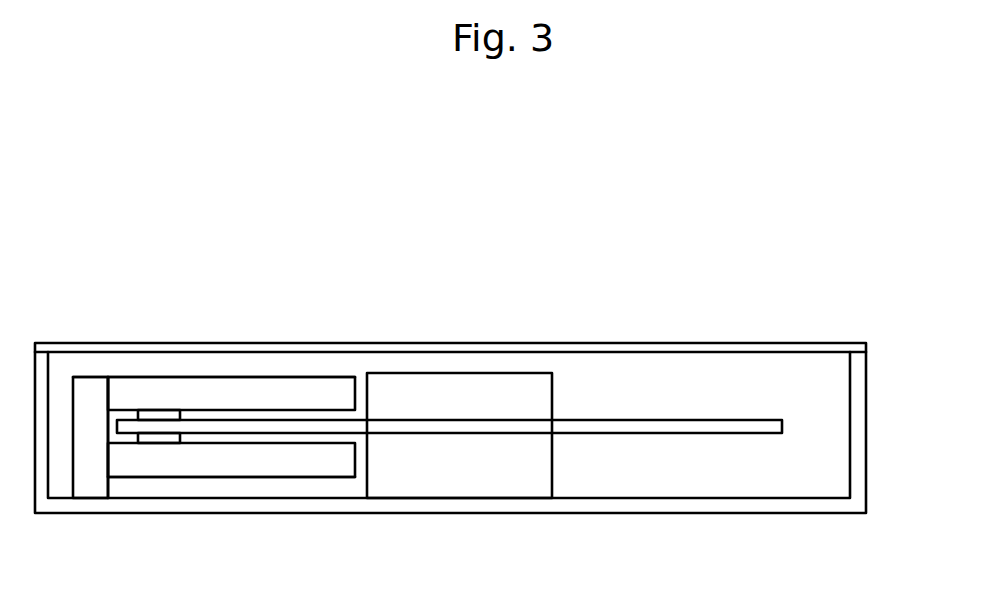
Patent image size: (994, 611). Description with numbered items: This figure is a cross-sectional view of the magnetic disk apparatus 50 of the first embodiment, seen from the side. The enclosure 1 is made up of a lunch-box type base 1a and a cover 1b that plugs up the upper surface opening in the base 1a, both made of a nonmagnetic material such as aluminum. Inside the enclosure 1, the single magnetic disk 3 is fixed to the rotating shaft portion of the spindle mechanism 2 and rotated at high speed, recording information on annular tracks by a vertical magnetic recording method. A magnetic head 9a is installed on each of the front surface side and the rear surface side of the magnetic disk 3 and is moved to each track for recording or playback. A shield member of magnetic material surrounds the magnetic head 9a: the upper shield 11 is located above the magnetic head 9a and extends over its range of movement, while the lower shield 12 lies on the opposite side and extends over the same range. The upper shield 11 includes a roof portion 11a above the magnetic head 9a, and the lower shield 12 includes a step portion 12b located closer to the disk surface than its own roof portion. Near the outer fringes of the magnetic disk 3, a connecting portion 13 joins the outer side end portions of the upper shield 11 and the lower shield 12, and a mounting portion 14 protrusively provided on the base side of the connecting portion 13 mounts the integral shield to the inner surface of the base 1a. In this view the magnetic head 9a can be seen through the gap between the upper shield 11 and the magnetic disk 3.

The enclosure 1 is at (868, 418).
The base 1a is at (642, 508).
The cover 1b is at (810, 345).
The spindle mechanism 2 is at (457, 399).
The magnetic disk 3 is at (703, 422).
The magnetic head 9a is at (158, 411).
The upper shield 11 is at (292, 377).
The roof portion 11a is at (217, 395).
The lower shield 12 is at (305, 478).
The step portion 12b is at (240, 463).
The connecting portion 13 is at (93, 405).
The mounting portion 14 is at (90, 488).
The magnetic disk apparatus 50 is at (637, 304).